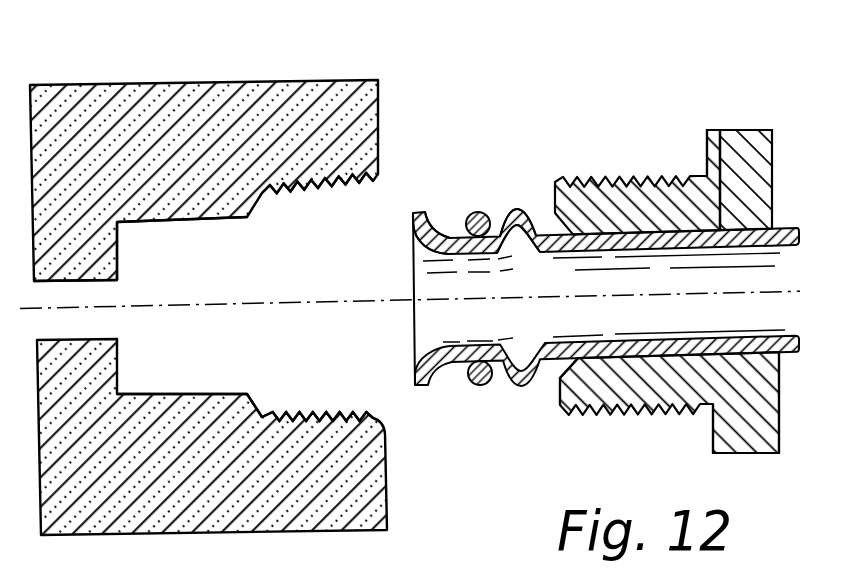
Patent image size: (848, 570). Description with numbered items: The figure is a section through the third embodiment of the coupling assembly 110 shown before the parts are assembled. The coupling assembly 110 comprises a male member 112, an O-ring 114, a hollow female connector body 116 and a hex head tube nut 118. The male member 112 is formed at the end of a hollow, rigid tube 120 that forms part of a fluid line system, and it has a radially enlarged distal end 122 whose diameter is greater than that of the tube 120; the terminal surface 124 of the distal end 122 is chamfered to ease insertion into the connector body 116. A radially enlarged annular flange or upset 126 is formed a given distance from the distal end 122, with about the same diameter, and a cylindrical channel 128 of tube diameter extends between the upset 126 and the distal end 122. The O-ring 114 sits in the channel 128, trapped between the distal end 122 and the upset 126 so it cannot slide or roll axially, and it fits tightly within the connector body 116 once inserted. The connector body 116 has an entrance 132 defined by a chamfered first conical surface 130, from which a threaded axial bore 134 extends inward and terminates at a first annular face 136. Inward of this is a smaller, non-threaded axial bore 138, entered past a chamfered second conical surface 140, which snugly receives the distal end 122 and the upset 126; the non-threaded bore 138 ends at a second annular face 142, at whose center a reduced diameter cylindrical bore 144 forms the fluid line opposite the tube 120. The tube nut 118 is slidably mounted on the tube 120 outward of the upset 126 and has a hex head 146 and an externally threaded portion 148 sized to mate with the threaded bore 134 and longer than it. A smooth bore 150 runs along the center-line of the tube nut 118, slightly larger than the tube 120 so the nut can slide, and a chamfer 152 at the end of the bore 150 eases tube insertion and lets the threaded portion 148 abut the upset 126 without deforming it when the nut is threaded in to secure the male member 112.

The coupling assembly 110 is at (597, 248).
The male member 112 is at (497, 191).
The O-ring 114 is at (476, 212).
The hollow female connector body 116 is at (289, 72).
The hex head tube nut 118 is at (701, 120).
The tube 120 is at (787, 226).
The distal end 122 is at (435, 212).
The terminal surface 124 is at (412, 212).
The upset 126 is at (518, 210).
The cylindrical channel 128 is at (480, 386).
The first conical surface 130 is at (388, 428).
The entrance 132 is at (390, 368).
The threaded axial bore 134 is at (283, 410).
The first annular face 136 is at (257, 395).
The non-threaded axial bore 138 is at (224, 222).
The second conical surface 140 is at (250, 216).
The second annular face 142 is at (118, 250).
The reduced diameter cylindrical bore 144 is at (92, 283).
The hex head 146 is at (742, 128).
The externally threaded portion 148 is at (627, 177).
The smooth bore 150 is at (713, 128).
The chamfer 152 is at (560, 378).